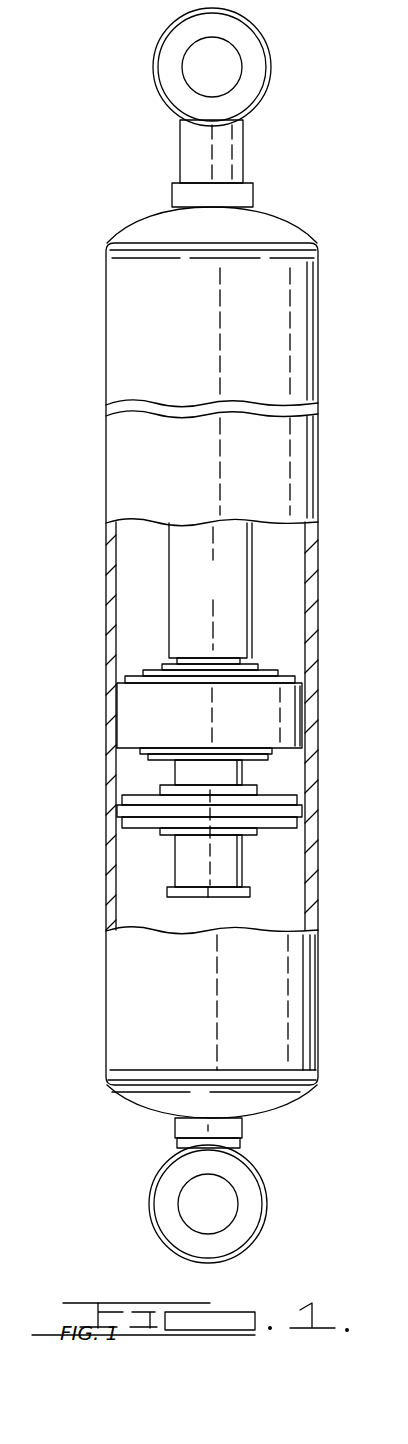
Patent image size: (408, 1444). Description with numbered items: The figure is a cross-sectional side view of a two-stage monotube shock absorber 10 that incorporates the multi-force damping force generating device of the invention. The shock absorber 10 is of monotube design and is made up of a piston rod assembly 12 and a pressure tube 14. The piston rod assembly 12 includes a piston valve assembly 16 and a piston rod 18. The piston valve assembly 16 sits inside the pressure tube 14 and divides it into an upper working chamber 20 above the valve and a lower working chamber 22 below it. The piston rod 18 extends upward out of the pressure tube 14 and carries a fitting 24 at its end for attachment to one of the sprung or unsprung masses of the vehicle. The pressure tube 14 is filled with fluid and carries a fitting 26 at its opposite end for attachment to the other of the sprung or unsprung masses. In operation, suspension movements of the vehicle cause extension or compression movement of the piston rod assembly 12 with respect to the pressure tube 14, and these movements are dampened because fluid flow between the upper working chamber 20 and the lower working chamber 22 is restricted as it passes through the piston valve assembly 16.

The shock absorber 10 is at (299, 199).
The piston rod assembly 12 is at (172, 148).
The pressure tube 14 is at (108, 671).
The piston valve assembly 16 is at (133, 727).
The piston rod 18 is at (228, 587).
The upper working chamber 20 is at (140, 563).
The lower working chamber 22 is at (152, 877).
The fitting 24 is at (267, 42).
The fitting 26 is at (148, 1200).